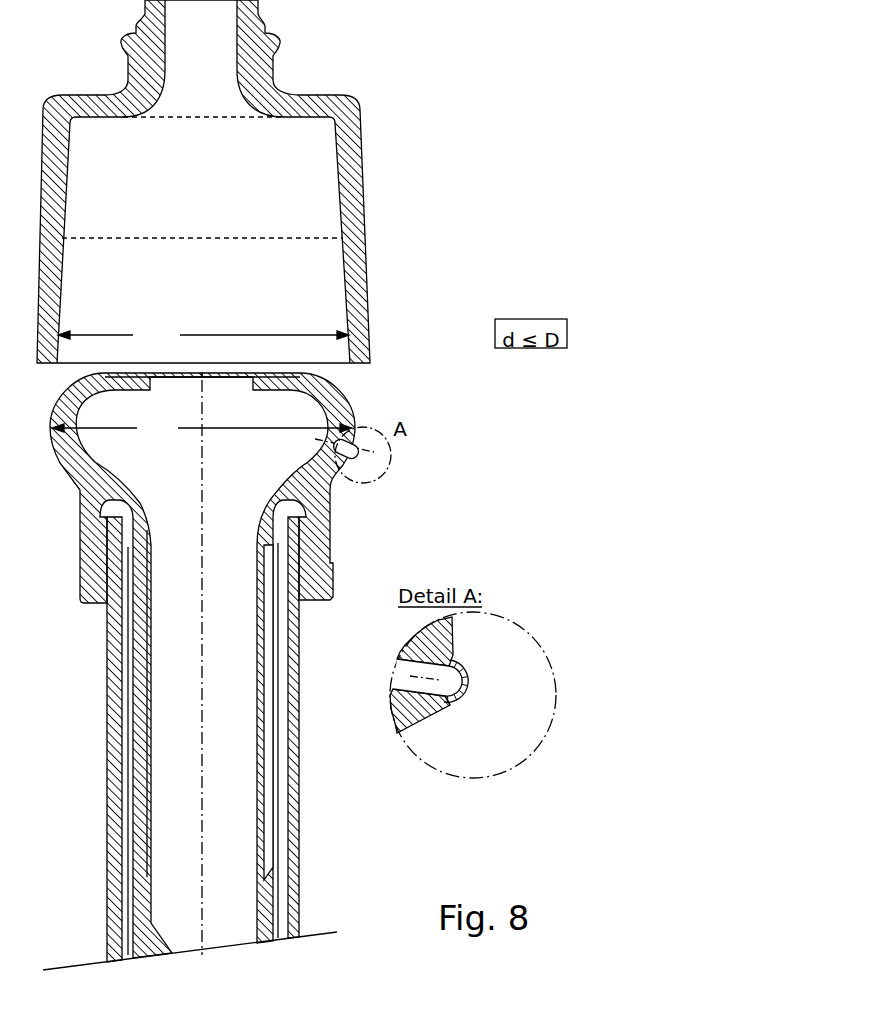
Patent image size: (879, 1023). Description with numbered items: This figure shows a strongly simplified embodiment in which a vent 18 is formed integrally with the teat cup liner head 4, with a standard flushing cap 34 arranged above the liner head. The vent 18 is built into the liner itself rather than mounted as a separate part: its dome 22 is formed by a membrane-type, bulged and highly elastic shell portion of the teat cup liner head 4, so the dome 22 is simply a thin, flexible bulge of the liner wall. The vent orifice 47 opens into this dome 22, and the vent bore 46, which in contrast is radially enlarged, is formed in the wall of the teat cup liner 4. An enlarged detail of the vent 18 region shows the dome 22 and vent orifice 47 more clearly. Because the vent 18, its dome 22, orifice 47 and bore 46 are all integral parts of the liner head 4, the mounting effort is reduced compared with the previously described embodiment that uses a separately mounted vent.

The flushing cap 34 is at (352, 163).
The teat cup liner head 4 is at (340, 393).
The vent bore 46 is at (323, 444).
The vent 18 is at (360, 448).
The dome 22 is at (463, 668).
The vent orifice 47 is at (465, 688).